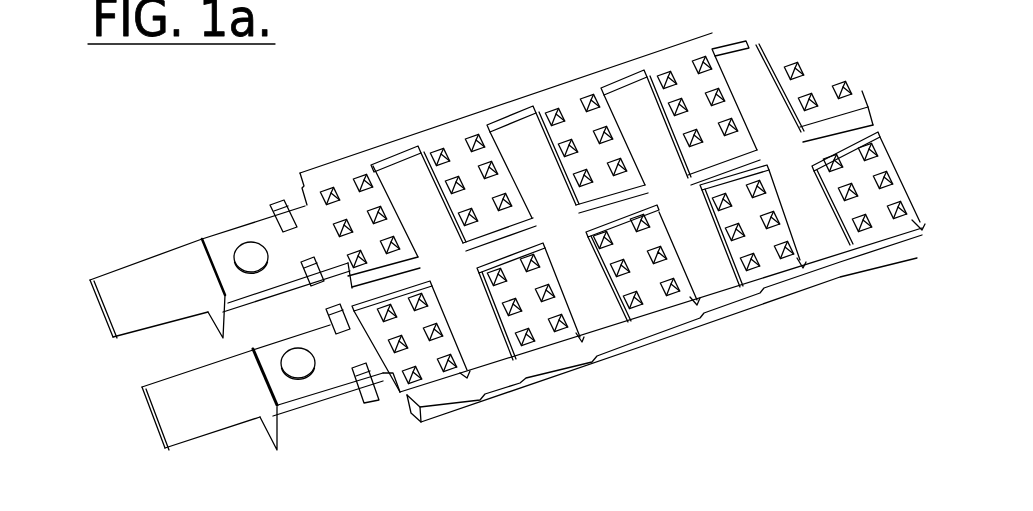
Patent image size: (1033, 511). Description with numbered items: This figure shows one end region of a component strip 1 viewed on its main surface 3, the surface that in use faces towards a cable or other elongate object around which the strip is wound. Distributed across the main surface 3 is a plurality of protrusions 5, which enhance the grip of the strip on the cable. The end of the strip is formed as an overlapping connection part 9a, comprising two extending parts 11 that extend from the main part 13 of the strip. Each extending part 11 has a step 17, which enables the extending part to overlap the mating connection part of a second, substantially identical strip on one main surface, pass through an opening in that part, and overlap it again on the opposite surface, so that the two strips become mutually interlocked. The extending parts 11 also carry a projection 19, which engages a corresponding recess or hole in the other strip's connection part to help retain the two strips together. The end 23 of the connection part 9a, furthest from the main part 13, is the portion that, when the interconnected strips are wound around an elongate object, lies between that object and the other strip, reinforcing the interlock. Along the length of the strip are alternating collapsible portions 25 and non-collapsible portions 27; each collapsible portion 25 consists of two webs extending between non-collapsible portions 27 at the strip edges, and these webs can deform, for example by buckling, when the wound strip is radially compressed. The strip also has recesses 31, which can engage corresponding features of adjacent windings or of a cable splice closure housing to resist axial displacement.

The component strip 1 is at (506, 94).
The main surface 3 is at (574, 82).
The protrusions 5 is at (867, 233).
The connection part 9a is at (197, 201).
The extending parts 11 is at (224, 355).
The main part 13 is at (664, 362).
The step 17 is at (254, 390).
The projection 19 is at (292, 321).
The end 23 is at (90, 297).
The collapsible portions 25 is at (638, 282).
The non-collapsible portions 27 is at (572, 142).
The recesses 31 is at (431, 295).